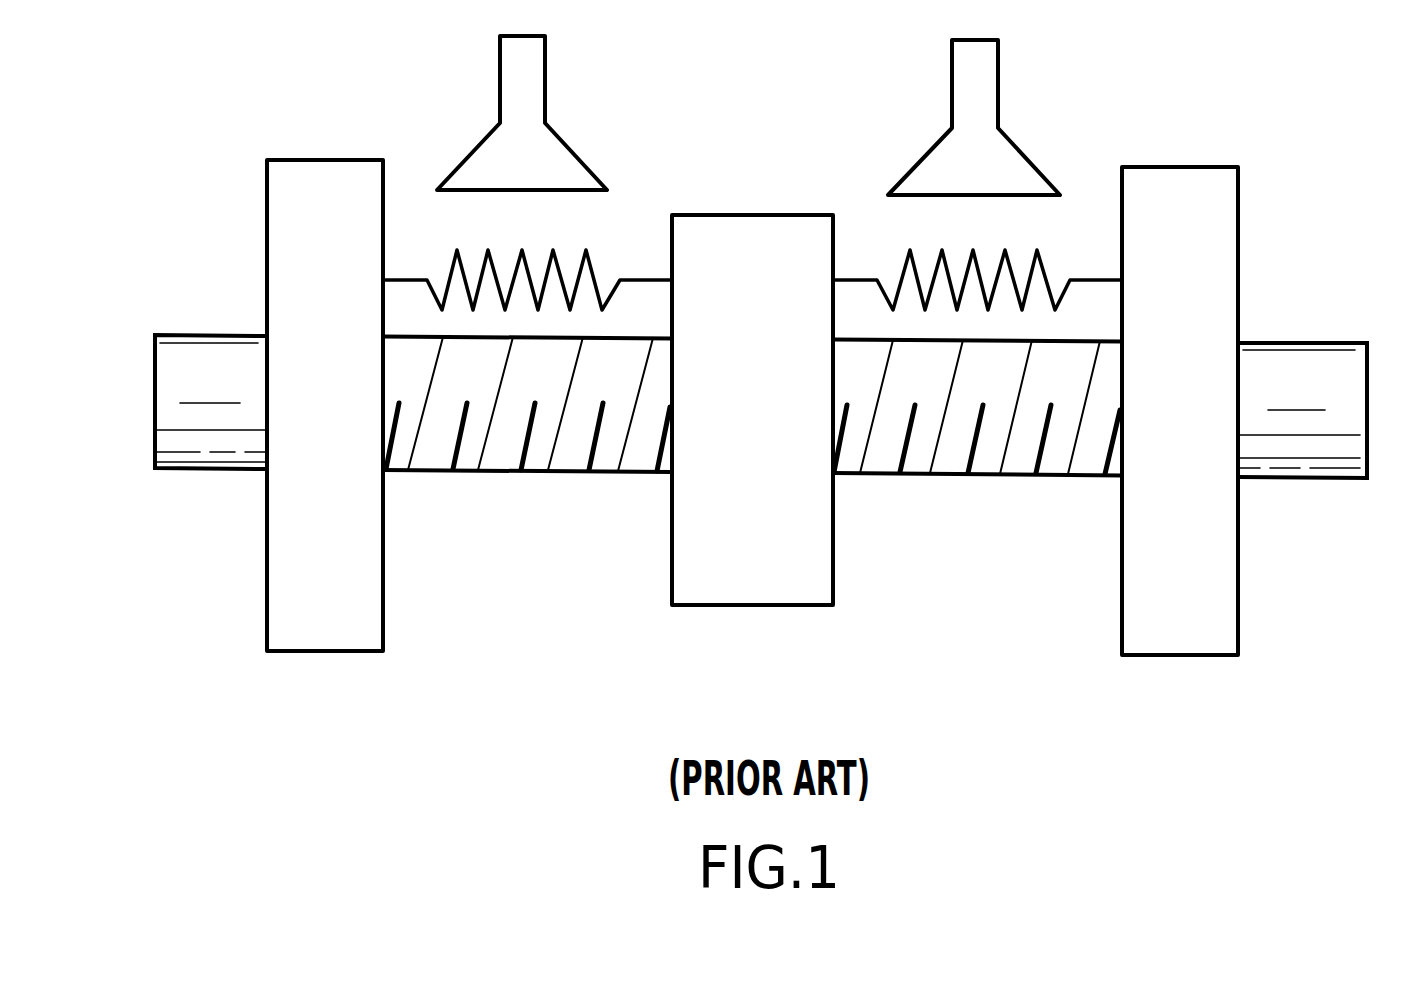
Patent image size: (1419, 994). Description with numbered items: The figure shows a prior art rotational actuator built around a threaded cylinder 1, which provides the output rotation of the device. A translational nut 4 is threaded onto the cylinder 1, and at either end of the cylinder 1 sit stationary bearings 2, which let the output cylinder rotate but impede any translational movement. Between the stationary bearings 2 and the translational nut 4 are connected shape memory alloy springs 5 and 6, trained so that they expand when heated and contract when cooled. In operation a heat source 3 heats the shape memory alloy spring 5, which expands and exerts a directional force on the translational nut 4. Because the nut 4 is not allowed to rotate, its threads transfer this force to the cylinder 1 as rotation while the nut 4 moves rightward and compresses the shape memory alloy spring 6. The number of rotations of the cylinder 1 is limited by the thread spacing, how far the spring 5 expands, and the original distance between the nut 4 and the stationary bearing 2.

The threaded cylinder 1 is at (1278, 343).
The stationary bearings 2 is at (345, 158).
The heat source 3 is at (562, 137).
The translational nut 4 is at (760, 215).
The shape memory alloy spring 5 is at (595, 275).
The shape memory alloy spring 6 is at (1047, 267).